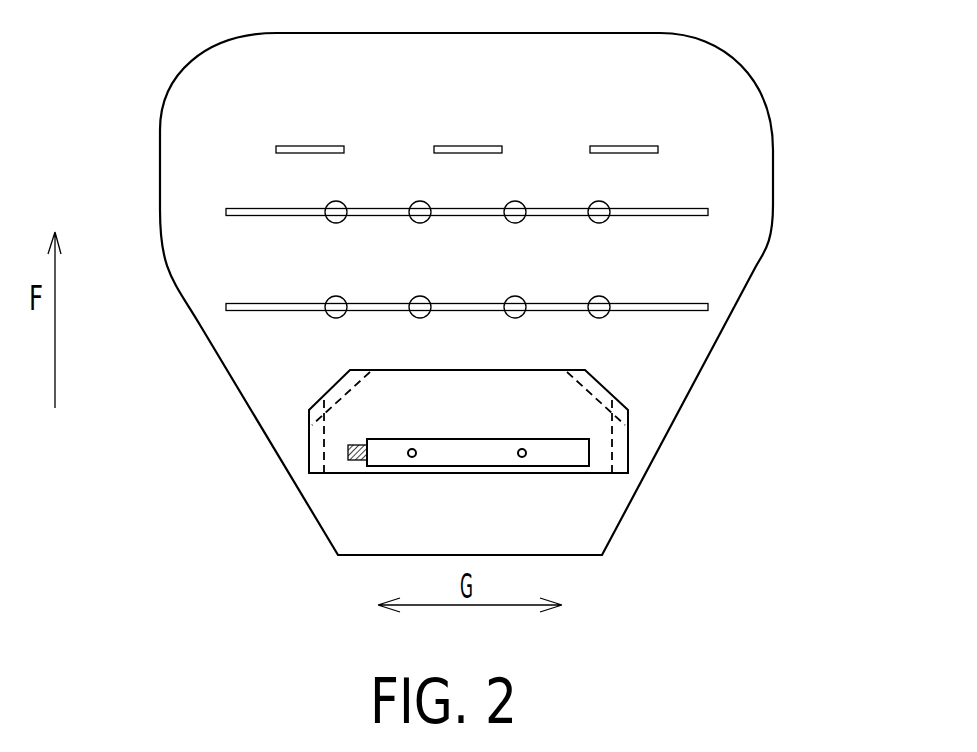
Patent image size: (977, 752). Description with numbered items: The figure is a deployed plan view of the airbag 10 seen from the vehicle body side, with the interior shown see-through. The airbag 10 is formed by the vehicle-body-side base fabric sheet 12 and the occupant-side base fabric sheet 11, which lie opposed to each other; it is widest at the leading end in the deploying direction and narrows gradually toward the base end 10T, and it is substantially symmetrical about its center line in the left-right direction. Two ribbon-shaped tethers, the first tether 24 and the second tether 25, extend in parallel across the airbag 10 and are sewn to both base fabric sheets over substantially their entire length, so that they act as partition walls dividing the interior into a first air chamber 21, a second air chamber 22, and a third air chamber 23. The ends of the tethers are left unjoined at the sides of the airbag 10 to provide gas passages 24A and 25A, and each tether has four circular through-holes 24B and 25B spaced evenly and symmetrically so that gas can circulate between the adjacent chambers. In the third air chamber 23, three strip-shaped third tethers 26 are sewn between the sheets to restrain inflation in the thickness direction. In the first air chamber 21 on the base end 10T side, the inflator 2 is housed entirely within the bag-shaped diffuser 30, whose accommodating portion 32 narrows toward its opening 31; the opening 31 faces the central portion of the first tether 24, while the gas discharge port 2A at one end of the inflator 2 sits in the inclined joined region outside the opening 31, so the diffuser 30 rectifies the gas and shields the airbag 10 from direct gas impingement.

The airbag 10 is at (148, 92).
The vehicle-body-side base fabric sheet 12 is at (187, 133).
The occupant-side base fabric sheet 11 is at (157, 162).
The third air chamber 23 is at (670, 80).
The third tethers 26 is at (635, 148).
The second tether 25 is at (650, 212).
The through-holes 25B is at (602, 202).
The gas passages 25A is at (195, 212).
The first tether 24 is at (281, 311).
The through-holes 24B is at (333, 297).
The gas passages 24A is at (210, 307).
The second air chamber 22 is at (672, 250).
The diffuser 30 is at (602, 467).
The opening 31 is at (518, 368).
The first air chamber 21 is at (623, 353).
The accommodating portion 32 is at (592, 423).
The inflator 2 is at (390, 458).
The gas discharge port 2A is at (348, 450).
The base end 10T is at (682, 492).